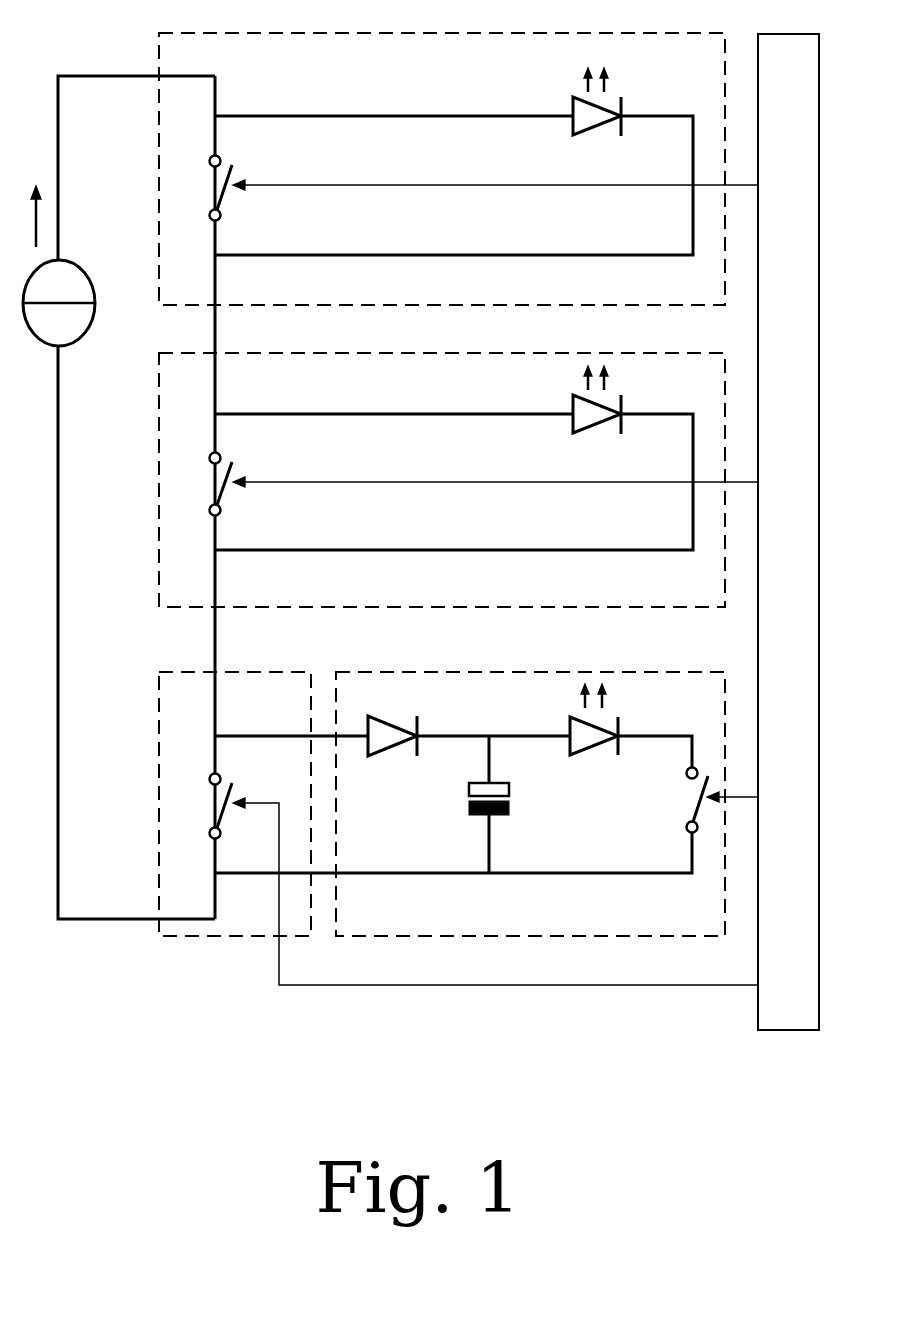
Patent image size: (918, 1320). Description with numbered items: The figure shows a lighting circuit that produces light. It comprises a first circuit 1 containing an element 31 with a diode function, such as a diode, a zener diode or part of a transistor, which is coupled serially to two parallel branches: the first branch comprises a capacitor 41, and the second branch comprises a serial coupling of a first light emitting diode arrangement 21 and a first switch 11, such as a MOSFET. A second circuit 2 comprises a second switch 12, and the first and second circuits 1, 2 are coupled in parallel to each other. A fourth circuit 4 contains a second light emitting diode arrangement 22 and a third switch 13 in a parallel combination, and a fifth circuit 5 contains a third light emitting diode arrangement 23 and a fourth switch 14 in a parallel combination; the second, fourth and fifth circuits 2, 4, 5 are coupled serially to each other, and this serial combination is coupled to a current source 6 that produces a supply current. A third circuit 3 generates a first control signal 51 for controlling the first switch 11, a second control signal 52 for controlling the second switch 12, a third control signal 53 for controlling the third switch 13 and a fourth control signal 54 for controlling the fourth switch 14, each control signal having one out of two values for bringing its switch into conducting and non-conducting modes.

The first circuit 1 is at (725, 683).
The second circuit 2 is at (159, 683).
The third circuit 3 is at (788, 1030).
The fourth circuit 4 is at (159, 370).
The fifth circuit 5 is at (159, 52).
The current source 6 is at (59, 285).
The first switch 11 is at (679, 800).
The second switch 12 is at (202, 806).
The third switch 13 is at (202, 484).
The fourth switch 14 is at (202, 188).
The first light emitting diode arrangement 21 is at (594, 733).
The second light emitting diode arrangement 22 is at (597, 418).
The third light emitting diode arrangement 23 is at (597, 117).
The element with a diode function 31 is at (392, 753).
The capacitor 41 is at (474, 804).
The first control signal 51 is at (760, 797).
The second control signal 52 is at (523, 899).
The third control signal 53 is at (523, 482).
The fourth control signal 54 is at (523, 185).